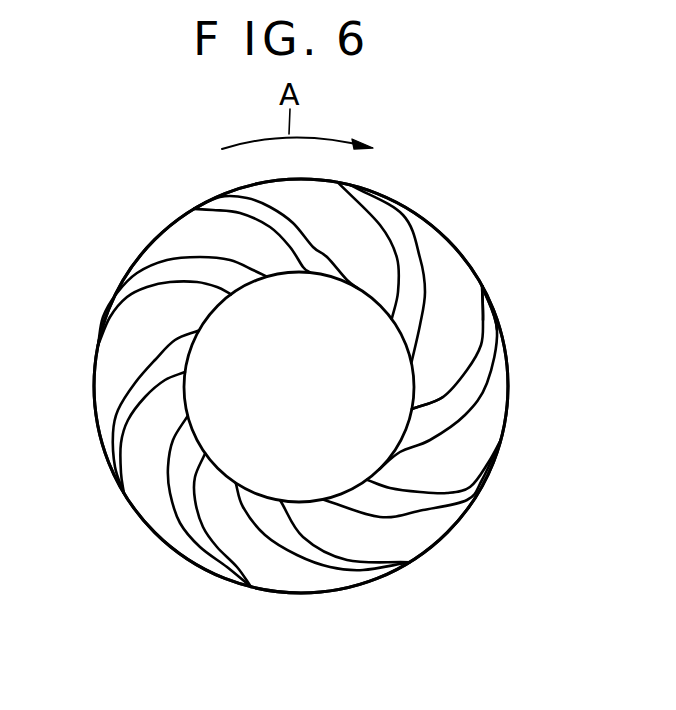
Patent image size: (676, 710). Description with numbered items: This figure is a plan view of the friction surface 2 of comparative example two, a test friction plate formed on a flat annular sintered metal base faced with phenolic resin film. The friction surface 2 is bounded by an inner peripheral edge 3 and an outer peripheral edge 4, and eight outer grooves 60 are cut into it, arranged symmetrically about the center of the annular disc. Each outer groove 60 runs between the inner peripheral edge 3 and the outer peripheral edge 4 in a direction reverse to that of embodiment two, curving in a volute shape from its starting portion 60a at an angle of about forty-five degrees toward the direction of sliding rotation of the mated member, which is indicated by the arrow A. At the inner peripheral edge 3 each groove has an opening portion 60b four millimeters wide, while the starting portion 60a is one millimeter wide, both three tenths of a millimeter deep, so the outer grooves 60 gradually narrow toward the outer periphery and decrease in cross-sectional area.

The friction surface 2 is at (321, 191).
The inner peripheral edge 3 is at (372, 300).
The outer peripheral edge 4 is at (448, 238).
The outer grooves 60 is at (484, 358).
The starting portion 60a is at (483, 287).
The opening portion 60b is at (407, 423).